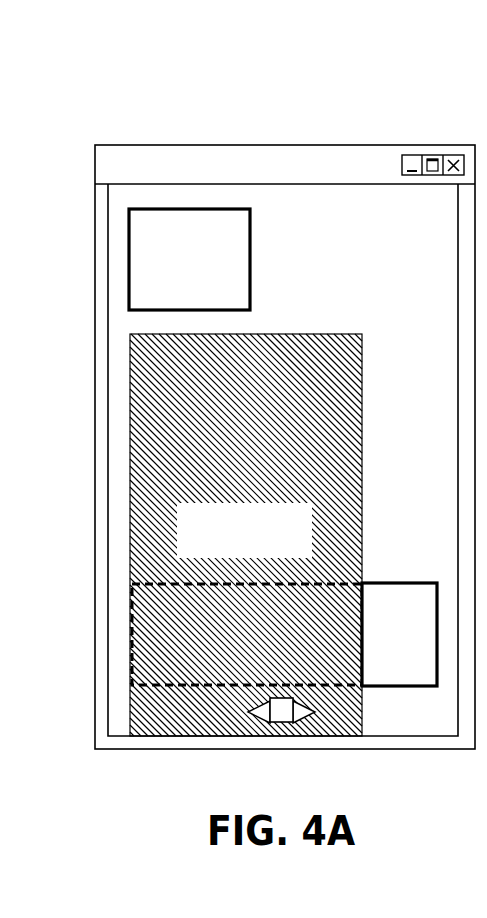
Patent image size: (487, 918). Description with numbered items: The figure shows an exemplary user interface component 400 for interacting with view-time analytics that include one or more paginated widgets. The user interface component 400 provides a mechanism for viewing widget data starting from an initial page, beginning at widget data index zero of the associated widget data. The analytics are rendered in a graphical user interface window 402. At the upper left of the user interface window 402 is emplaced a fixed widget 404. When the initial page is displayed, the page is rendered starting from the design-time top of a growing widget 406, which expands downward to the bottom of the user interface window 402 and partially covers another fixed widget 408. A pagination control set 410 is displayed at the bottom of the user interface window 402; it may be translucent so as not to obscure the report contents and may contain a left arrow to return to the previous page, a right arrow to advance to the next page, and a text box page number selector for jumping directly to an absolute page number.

The user interface component 400 is at (387, 51).
The graphical user interface window 402 is at (392, 212).
The fixed widget 404 is at (142, 241).
The growing widget 406 is at (143, 420).
The fixed widget 408 is at (398, 663).
The pagination control set 410 is at (285, 717).